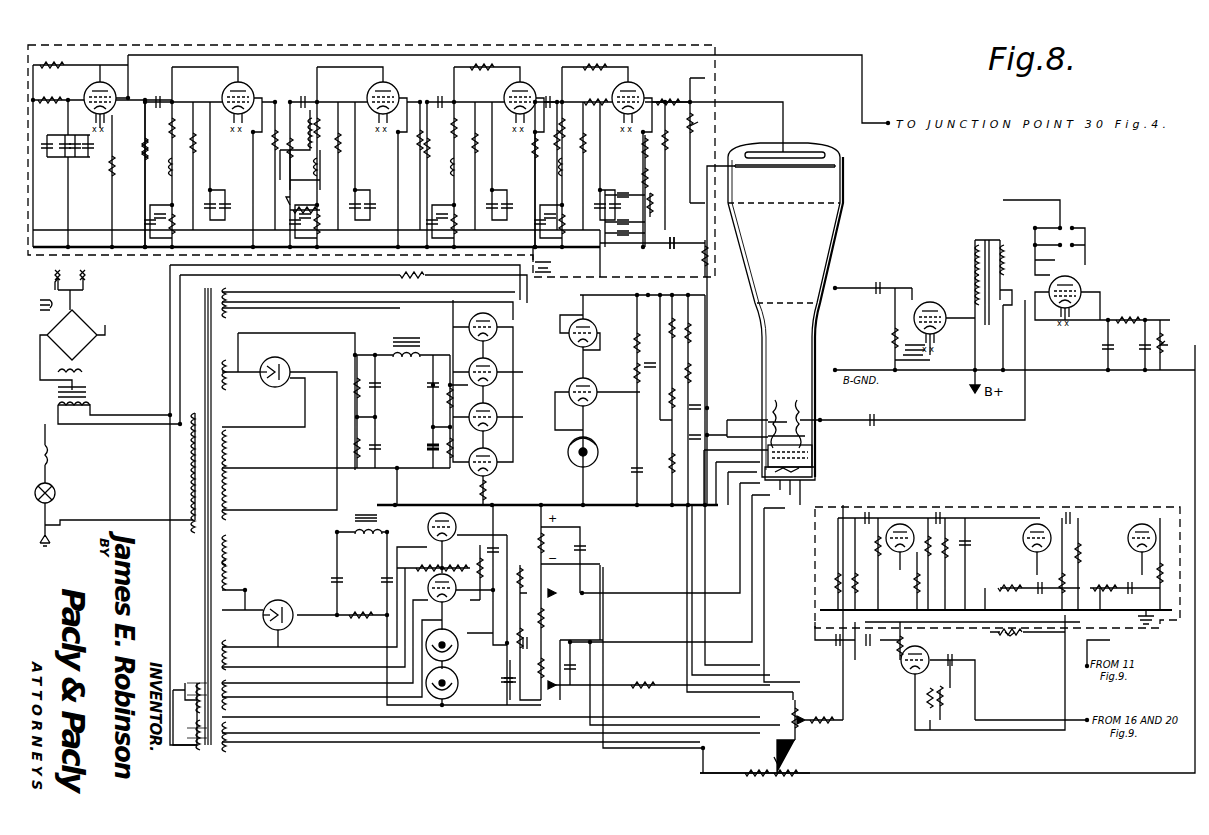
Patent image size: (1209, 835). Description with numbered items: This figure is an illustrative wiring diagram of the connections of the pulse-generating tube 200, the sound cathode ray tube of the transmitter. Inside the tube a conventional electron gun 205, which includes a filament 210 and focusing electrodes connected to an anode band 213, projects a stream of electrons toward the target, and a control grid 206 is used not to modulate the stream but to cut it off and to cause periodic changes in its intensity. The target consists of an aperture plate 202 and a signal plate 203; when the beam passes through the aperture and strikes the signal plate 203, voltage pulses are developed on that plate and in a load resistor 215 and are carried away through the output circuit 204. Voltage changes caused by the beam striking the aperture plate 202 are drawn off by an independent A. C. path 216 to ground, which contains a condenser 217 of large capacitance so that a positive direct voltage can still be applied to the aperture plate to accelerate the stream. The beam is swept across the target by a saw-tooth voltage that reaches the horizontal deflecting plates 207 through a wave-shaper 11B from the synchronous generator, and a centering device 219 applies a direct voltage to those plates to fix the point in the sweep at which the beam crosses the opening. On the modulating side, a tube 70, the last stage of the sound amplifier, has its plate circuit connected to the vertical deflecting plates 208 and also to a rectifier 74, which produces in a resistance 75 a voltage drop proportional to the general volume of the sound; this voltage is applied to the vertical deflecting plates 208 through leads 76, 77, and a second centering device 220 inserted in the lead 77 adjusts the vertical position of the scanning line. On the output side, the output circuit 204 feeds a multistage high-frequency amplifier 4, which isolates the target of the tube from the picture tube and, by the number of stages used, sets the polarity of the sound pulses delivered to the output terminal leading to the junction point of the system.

The multistage high-frequency amplifier 4 is at (727, 48).
The pulse-generating tube 200 is at (843, 185).
The aperture plate 202 is at (822, 168).
The signal plate 203 is at (815, 150).
The output circuit 204 is at (786, 98).
The electron gun 205 is at (812, 466).
The control grid 206 is at (768, 455).
The horizontal deflecting plates 207 is at (834, 414).
The vertical deflecting plates 208 is at (790, 395).
The filament 210 is at (800, 505).
The anode band 213 is at (784, 253).
The load resistor 215 is at (700, 121).
The A. C. path 216 is at (705, 202).
The condenser 217 is at (676, 234).
The centering device 219 is at (810, 729).
The centering device 220 is at (758, 765).
The tube 70 is at (930, 300).
The rectifier 74 is at (1085, 268).
The resistance 75 is at (1168, 345).
The lead 76 is at (1010, 773).
The lead 77 is at (860, 715).
The wave-shaper 11B is at (1000, 503).